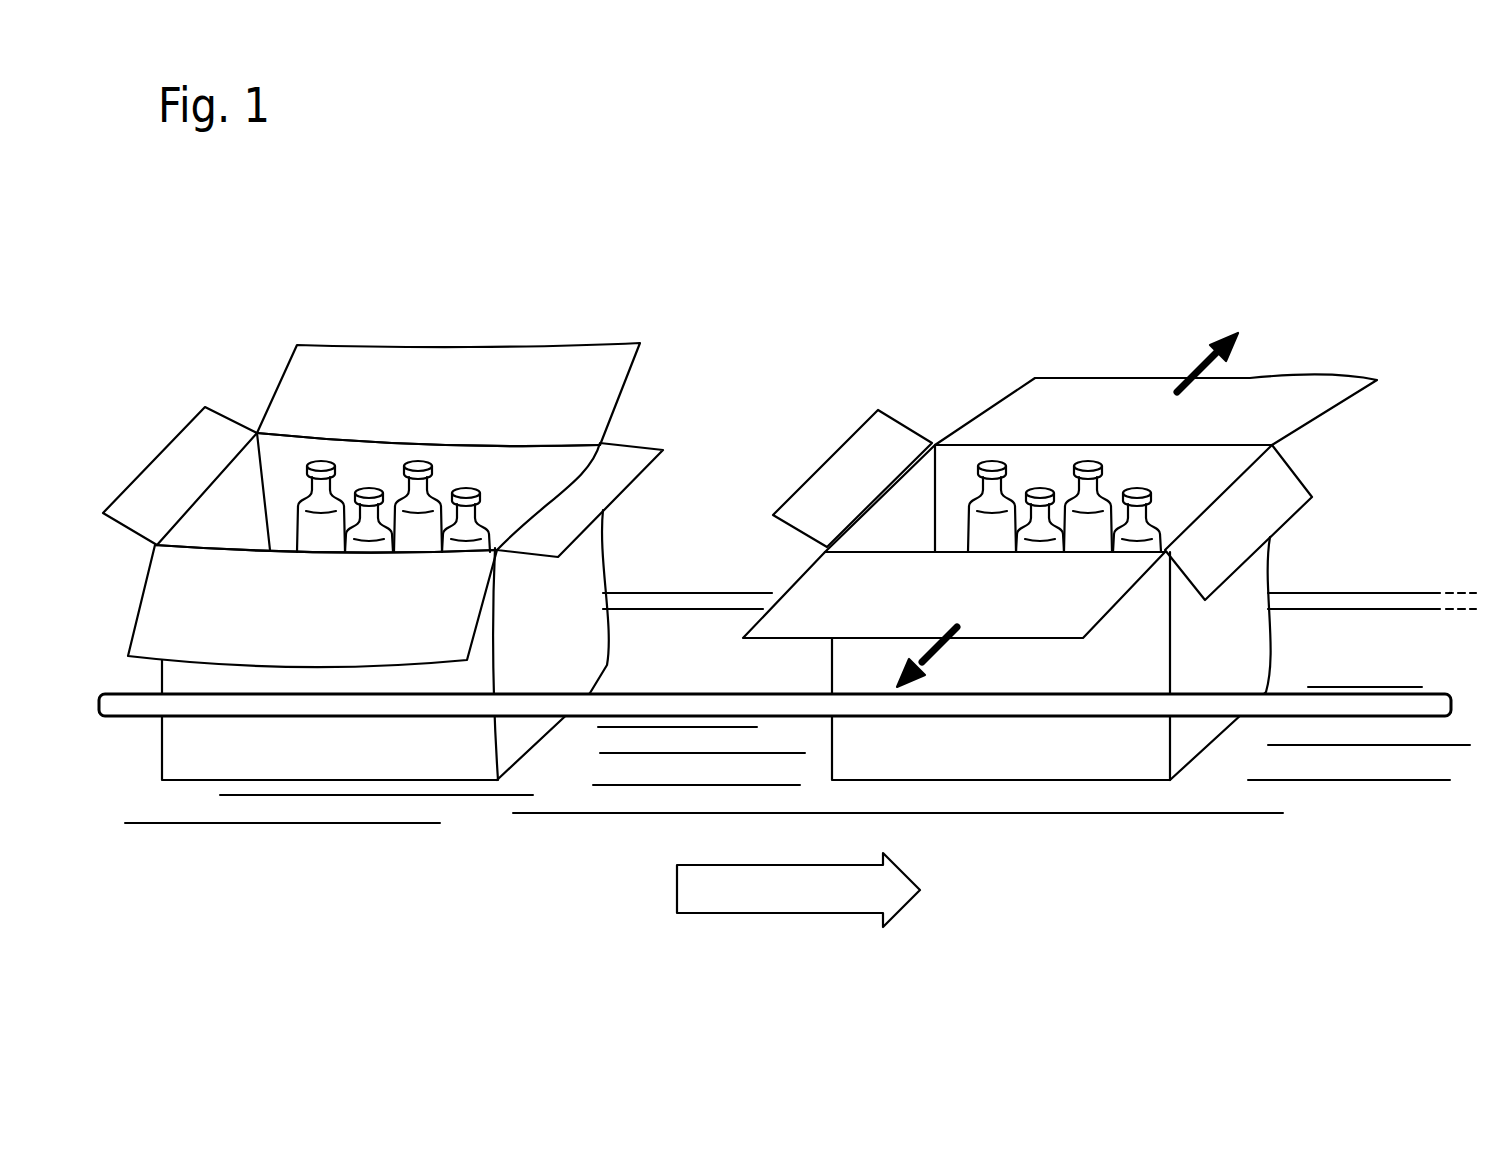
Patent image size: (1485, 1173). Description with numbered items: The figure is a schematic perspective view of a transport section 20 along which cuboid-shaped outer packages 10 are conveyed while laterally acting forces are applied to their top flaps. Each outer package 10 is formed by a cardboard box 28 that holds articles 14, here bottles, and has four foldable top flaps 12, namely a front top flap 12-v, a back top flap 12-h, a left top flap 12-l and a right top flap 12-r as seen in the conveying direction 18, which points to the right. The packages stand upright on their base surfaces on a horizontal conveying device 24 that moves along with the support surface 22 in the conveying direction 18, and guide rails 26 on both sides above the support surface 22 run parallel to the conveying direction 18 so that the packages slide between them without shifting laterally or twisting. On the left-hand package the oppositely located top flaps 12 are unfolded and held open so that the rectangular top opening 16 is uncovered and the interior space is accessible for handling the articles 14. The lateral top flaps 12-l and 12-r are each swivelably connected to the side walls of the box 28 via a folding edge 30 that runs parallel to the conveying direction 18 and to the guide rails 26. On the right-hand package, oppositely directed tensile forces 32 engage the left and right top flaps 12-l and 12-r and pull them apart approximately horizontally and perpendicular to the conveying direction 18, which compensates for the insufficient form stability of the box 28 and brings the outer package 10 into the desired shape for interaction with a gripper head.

The outer package 10 is at (740, 601).
The top flaps 12 is at (740, 473).
The back top flap 12-h is at (517, 477).
The left top flap 12-l is at (427, 411).
The right top flap 12-r is at (287, 630).
The front top flap 12-v is at (904, 521).
The articles 14 is at (306, 543).
The top opening 16 is at (278, 455).
The conveying direction 18 is at (798, 890).
The transport section 20 is at (1282, 868).
The support surface 22 is at (775, 814).
The horizontal conveying device 24 is at (775, 705).
The guide rails 26 is at (665, 606).
The box 28 is at (740, 601).
The folding edge 30 is at (542, 448).
The tensile forces 32 is at (1067, 508).